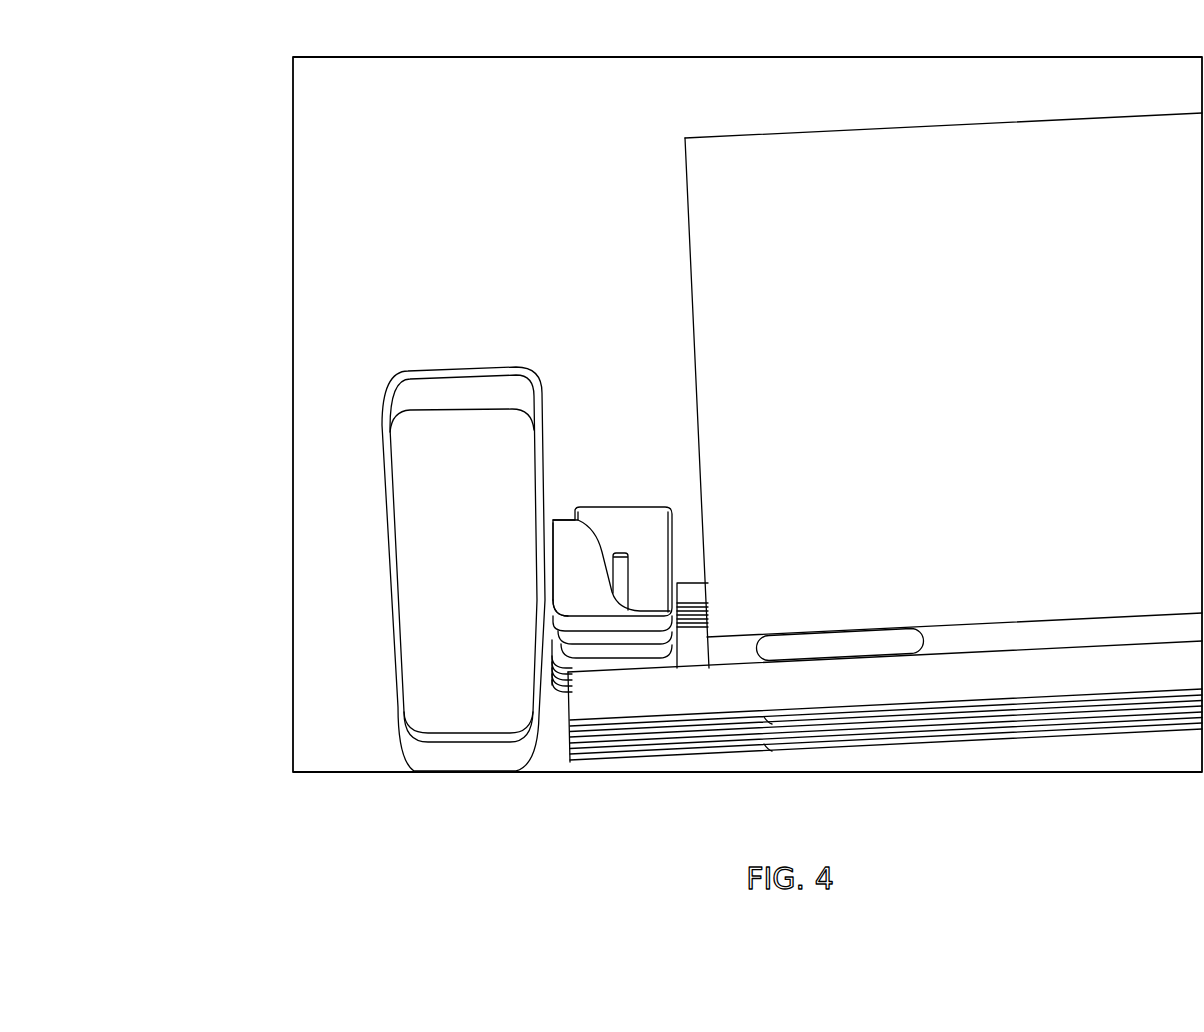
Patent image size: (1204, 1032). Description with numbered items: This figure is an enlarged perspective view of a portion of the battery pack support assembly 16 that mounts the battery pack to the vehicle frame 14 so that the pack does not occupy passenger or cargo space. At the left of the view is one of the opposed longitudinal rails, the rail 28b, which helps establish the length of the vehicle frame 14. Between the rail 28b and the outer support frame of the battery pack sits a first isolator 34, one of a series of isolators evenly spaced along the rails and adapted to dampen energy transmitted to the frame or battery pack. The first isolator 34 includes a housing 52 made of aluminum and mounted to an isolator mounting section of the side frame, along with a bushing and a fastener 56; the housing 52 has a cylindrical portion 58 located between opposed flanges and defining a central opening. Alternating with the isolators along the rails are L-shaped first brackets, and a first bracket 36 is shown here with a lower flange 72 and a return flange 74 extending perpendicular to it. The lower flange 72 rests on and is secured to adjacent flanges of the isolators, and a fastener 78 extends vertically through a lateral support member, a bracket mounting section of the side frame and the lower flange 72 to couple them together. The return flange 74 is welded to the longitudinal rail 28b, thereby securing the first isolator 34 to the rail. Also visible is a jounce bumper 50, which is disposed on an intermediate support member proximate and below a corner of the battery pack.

The vehicle frame 14 is at (357, 553).
The longitudinal rail 28b is at (387, 446).
The cylindrical portion 58 is at (612, 525).
The housing 52 is at (585, 510).
The battery pack support assembly 16 is at (593, 494).
The fastener 78 is at (628, 595).
The return flange 74 is at (573, 583).
The lower flange 72 is at (620, 617).
The first bracket 36 is at (586, 627).
The first isolator 34 is at (652, 493).
The fastener 56 is at (692, 593).
The jounce bumper 50 is at (868, 650).